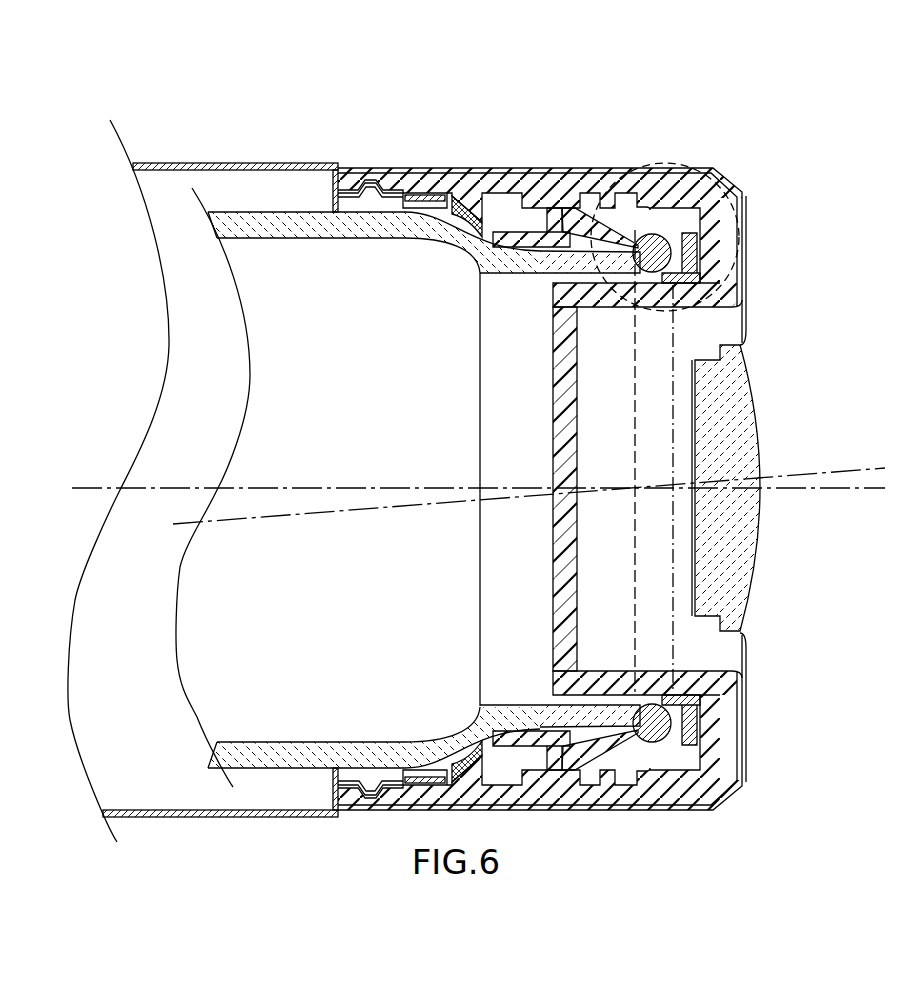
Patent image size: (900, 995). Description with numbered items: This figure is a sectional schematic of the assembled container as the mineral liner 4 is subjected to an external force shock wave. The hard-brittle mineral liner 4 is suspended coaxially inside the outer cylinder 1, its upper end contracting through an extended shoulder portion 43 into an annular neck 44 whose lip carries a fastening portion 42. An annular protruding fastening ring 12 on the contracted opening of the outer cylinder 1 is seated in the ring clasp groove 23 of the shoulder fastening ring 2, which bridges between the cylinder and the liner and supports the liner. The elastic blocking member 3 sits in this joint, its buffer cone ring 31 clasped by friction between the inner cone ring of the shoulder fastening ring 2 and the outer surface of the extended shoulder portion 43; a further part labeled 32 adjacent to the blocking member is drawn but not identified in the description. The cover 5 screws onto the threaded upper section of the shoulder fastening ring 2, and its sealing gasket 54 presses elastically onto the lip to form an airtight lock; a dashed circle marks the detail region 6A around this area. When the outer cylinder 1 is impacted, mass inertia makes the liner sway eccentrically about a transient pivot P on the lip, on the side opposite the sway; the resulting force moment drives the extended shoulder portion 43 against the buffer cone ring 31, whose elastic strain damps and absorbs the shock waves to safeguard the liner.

The outer cylinder 1 is at (204, 160).
The shoulder fastening ring 2 is at (464, 159).
The elastic blocking member 3 is at (535, 245).
The mineral liner 4 is at (378, 238).
The cover 5 is at (748, 702).
The enlarged region 6A is at (745, 165).
The annular protruding fastening ring 12 is at (350, 214).
The ring clasp groove 23 is at (368, 177).
The buffer cone ring 31 is at (476, 741).
The inclined wedge portion 32 is at (567, 248).
The fastening portion 42 is at (637, 437).
The extended shoulder portion 43 is at (453, 732).
The annular neck 44 is at (530, 276).
The sealing gasket 54 is at (684, 257).
The pivot P is at (635, 227).